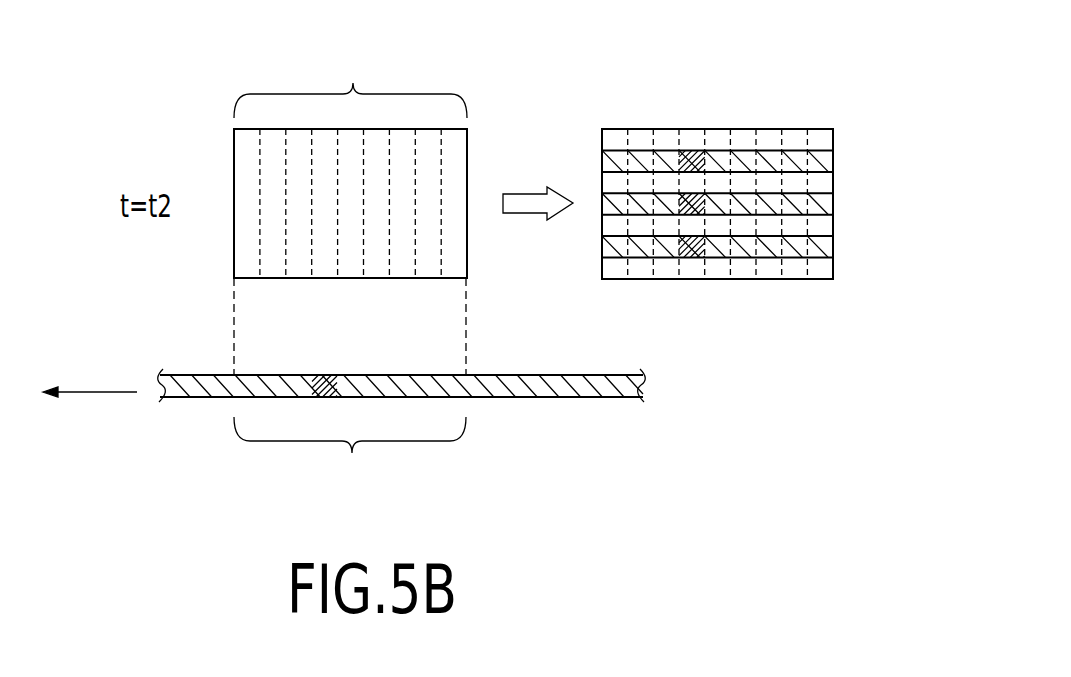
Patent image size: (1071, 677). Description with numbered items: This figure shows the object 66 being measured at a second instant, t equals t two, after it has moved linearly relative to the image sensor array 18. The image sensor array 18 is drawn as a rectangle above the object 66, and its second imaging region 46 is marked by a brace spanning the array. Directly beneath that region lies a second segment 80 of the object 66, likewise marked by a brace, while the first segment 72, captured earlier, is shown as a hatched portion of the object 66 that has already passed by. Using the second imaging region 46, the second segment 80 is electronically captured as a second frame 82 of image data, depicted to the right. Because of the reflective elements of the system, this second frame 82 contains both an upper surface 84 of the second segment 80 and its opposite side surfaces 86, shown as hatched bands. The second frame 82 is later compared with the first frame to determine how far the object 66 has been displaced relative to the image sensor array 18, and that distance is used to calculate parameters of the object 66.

The image sensor array 18 is at (206, 102).
The second imaging region 46 is at (350, 80).
The second frame 82 is at (766, 171).
The upper surface 84 is at (831, 202).
The opposite side surfaces 86 is at (831, 156).
The object 66 is at (402, 363).
The first segment 72 is at (320, 375).
The second segment 80 is at (350, 456).